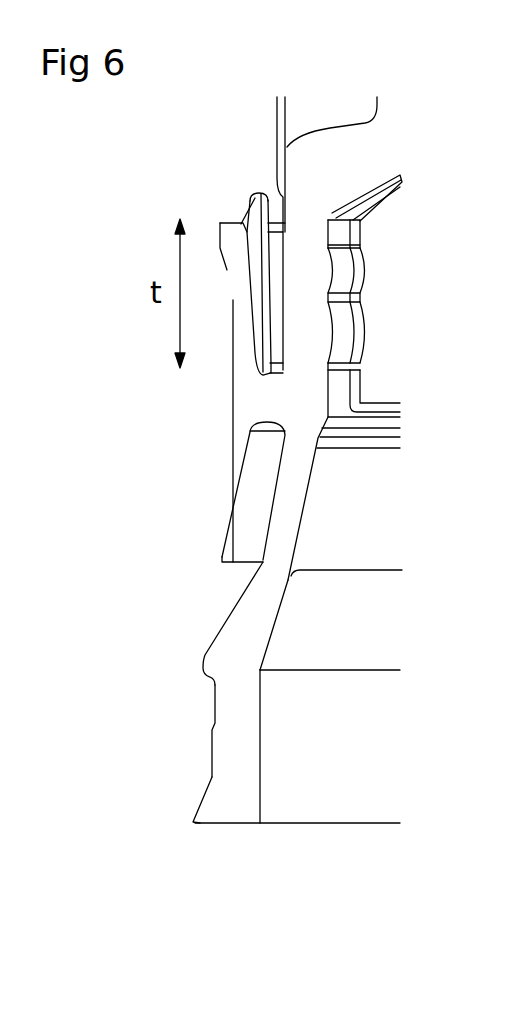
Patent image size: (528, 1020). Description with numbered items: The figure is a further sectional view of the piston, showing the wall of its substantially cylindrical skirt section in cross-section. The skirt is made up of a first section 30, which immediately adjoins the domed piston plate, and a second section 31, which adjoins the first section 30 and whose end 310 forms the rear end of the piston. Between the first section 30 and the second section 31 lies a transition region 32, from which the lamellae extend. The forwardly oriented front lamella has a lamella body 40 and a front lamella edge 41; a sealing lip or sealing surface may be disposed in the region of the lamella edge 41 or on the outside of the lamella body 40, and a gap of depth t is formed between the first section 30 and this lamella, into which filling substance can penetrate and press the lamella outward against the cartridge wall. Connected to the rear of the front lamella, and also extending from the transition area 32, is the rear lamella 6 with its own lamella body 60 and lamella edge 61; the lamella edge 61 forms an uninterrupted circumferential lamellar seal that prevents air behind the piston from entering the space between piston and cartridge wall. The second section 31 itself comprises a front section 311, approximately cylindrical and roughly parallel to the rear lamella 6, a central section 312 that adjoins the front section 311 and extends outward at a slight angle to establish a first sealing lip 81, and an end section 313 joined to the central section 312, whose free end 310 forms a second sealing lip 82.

The rear lamella 6 is at (242, 440).
The first section 30 is at (325, 237).
The second section 31 is at (191, 694).
The transition region 32 is at (272, 397).
The lamella body 40 is at (233, 300).
The front lamella edge 41 is at (240, 224).
The lamella body 60 is at (242, 477).
The lamella edge 61 is at (220, 553).
The first sealing lip 81 is at (203, 663).
The second sealing lip 82 is at (193, 822).
The end 310 is at (223, 825).
The front section 311 is at (297, 497).
The central section 312 is at (270, 578).
The end section 313 is at (227, 752).